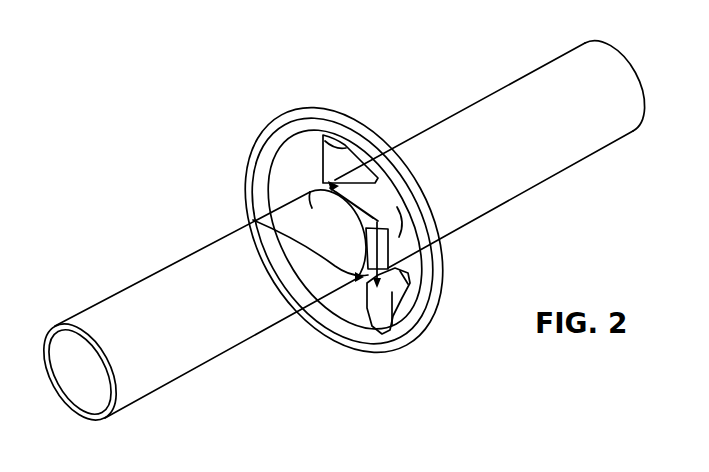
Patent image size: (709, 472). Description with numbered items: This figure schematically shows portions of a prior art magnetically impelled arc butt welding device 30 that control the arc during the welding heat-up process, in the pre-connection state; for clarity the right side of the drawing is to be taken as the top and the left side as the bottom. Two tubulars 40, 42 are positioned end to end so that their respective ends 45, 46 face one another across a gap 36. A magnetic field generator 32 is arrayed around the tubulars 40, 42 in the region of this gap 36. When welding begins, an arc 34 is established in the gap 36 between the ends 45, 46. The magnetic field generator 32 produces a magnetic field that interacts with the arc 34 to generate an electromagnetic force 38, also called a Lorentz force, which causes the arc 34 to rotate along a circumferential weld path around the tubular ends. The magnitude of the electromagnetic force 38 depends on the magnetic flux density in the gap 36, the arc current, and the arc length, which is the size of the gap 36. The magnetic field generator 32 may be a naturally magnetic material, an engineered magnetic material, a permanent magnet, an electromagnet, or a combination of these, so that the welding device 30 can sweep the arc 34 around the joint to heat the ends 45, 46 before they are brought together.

The MIAB welding device 30 is at (103, 72).
The magnetic field generator 32 is at (392, 318).
The arc 34 is at (378, 216).
The gap 36 is at (402, 274).
The electromagnetic force 38 is at (243, 229).
The tubular 40 is at (86, 330).
The tubular 42 is at (618, 78).
The end 45 is at (307, 192).
The end 46 is at (440, 246).